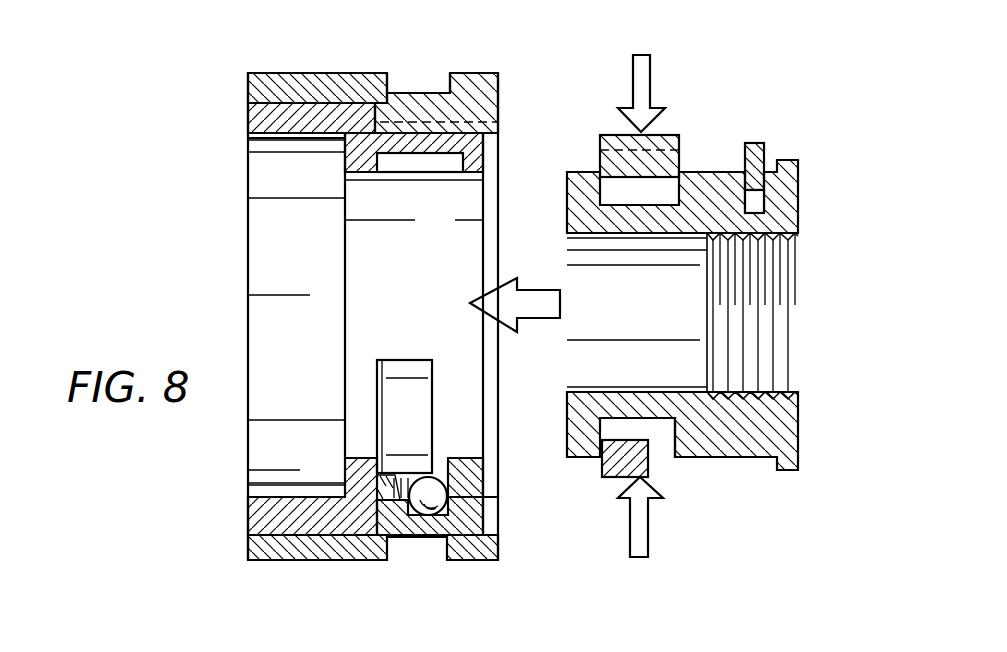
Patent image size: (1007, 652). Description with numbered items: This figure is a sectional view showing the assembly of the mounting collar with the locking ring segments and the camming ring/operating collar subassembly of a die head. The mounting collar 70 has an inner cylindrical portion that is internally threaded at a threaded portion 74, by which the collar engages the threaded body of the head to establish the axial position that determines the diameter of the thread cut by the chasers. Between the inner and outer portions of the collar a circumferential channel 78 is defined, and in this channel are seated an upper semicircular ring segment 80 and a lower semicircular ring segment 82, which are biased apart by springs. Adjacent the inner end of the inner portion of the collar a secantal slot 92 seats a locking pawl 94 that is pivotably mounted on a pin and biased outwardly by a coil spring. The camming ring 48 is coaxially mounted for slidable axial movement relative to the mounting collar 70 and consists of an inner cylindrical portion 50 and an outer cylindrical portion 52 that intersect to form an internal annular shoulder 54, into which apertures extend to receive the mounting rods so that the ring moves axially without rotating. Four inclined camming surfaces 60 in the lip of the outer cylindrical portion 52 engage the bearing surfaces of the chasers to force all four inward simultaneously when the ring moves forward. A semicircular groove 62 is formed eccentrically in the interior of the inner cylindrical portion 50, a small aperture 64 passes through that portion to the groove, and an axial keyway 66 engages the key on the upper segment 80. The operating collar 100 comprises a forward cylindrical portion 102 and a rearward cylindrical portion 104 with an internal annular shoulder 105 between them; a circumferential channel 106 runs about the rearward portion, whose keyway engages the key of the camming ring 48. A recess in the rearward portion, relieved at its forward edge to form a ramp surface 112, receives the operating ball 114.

The camming ring 48 is at (246, 242).
The inner cylindrical portion 50 is at (428, 173).
The outer cylindrical portion 52 is at (303, 505).
The internal annular shoulder 54 is at (350, 292).
The inclined camming surfaces 60 is at (262, 138).
The semicircular groove 62 is at (378, 394).
The aperture 64 is at (433, 474).
The axial keyway 66 is at (483, 160).
The mounting collar 70 is at (806, 371).
The threaded portion 74 is at (757, 240).
The circumferential channel 78 is at (665, 432).
The upper semicircular ring segment 80 is at (668, 163).
The lower semicircular ring segment 82 is at (605, 478).
The secantal slot 92 is at (757, 198).
The locking pawl 94 is at (763, 150).
The operating collar 100 is at (240, 87).
The forward cylindrical portion 102 is at (305, 548).
The rearward cylindrical portion 104 is at (440, 115).
The internal annular shoulder 105 is at (372, 73).
The circumferential channel 106 is at (450, 76).
The ramp surface 112 is at (412, 500).
The operating ball 114 is at (428, 516).